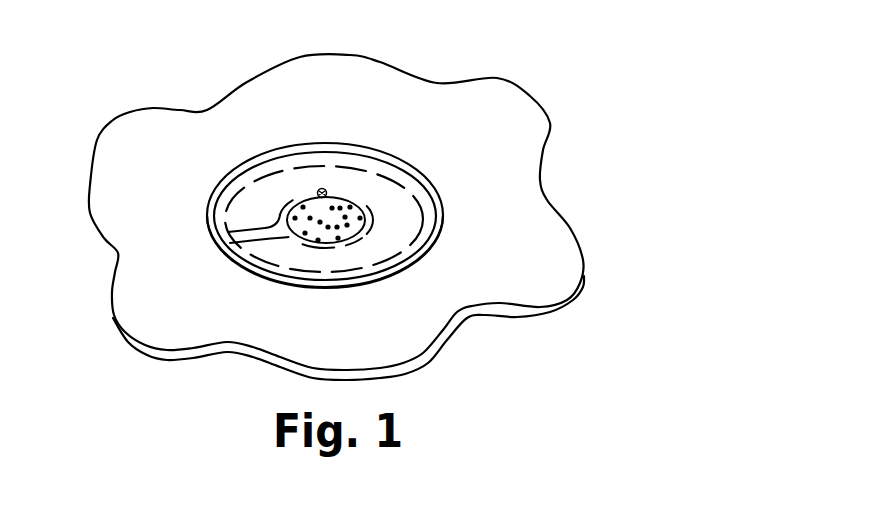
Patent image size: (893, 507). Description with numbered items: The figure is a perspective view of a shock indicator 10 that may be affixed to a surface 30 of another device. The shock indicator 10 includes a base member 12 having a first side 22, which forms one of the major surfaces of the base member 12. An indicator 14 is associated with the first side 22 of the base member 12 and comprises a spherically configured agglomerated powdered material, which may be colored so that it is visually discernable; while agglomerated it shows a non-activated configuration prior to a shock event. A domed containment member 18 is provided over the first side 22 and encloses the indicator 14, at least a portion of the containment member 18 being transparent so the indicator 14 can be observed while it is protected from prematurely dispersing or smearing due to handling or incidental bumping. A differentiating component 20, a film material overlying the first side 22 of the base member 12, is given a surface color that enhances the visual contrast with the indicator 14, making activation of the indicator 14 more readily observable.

The shock indicator 10 is at (339, 207).
The base member 12 is at (350, 217).
The indicator 14 is at (315, 202).
The domed containment member 18 is at (540, 175).
The differentiating component 20 is at (280, 224).
The first side 22 is at (391, 224).
The surface 30 is at (322, 217).